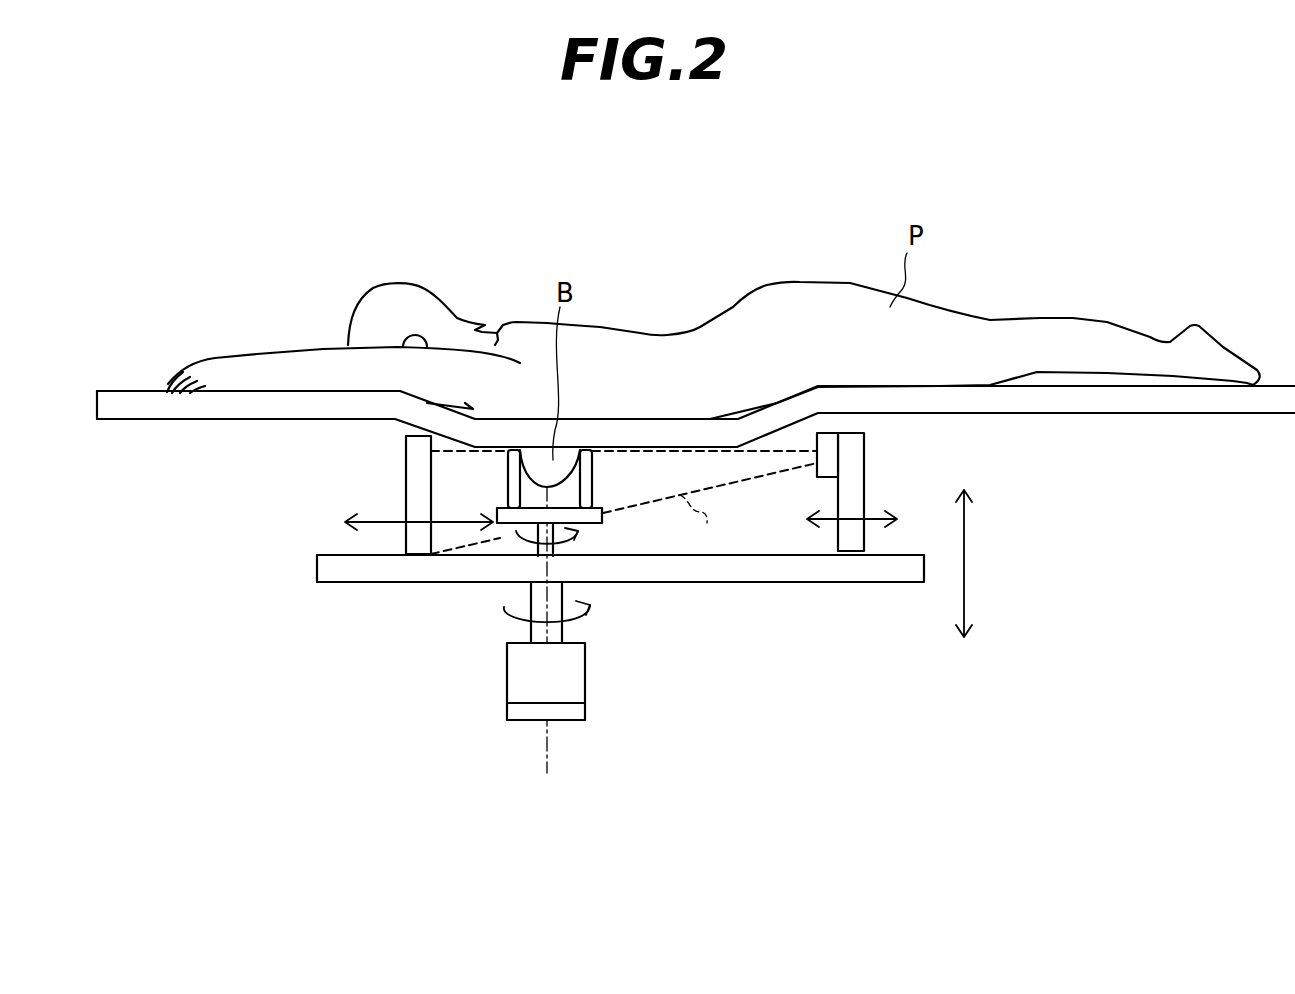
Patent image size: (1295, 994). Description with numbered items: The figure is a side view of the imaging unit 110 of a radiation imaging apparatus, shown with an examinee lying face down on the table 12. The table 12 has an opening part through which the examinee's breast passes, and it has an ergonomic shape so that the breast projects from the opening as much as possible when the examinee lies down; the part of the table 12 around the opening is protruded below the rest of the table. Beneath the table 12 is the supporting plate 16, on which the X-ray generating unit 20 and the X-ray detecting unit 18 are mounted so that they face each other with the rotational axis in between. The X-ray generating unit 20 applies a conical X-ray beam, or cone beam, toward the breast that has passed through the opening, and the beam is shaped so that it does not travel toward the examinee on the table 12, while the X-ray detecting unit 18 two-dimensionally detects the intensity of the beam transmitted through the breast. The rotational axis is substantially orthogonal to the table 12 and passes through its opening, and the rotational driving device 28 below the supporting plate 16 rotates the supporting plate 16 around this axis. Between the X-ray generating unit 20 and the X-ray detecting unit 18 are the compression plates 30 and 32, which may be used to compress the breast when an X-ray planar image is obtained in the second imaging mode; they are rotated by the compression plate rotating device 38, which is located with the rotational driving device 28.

The table 12 is at (125, 391).
The imaging unit 110 is at (128, 453).
The supporting plate 16 is at (707, 573).
The X-ray detecting unit 18 is at (406, 468).
The X-ray generating unit 20 is at (817, 470).
The rotational driving device 28 is at (585, 670).
The compression plate rotating device 38 is at (585, 712).
The compression plate 30 is at (592, 466).
The compression plate 32 is at (508, 470).